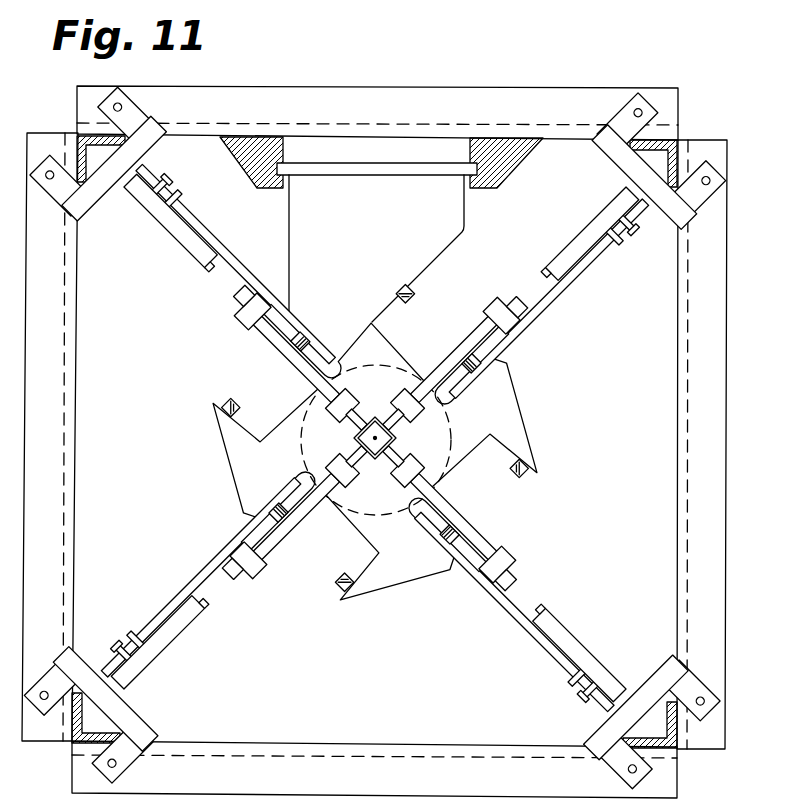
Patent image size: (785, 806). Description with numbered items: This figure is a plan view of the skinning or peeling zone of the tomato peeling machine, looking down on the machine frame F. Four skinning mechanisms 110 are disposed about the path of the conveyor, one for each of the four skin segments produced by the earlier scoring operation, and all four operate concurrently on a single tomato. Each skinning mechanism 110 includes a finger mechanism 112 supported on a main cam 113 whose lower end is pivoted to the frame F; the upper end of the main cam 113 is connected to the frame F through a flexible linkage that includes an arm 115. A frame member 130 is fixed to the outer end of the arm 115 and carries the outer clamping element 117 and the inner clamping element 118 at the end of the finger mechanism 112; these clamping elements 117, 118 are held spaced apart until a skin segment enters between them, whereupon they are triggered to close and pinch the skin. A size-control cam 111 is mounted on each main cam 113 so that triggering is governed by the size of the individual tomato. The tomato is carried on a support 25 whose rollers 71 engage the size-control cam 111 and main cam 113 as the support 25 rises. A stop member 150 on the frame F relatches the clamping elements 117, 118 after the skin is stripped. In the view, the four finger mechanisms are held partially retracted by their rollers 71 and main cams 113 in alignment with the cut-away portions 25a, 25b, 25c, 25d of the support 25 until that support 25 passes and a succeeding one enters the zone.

The machine frame F is at (427, 88).
The support 25 is at (348, 226).
The cut-away portion 25a is at (396, 352).
The cut-away portion 25b is at (476, 446).
The cut-away portion 25c is at (372, 548).
The cut-away portion 25d is at (285, 428).
The roller 71 is at (310, 334).
The skinning mechanism 110 is at (242, 383).
The size-control cam 111 is at (290, 316).
The finger mechanism 112 is at (316, 381).
The main cam 113 is at (224, 245).
The arm 115 is at (226, 267).
The outer clamping element 117 is at (354, 445).
The inner clamping element 118 is at (400, 403).
The frame member 130 is at (233, 324).
The stop member 150 is at (170, 238).